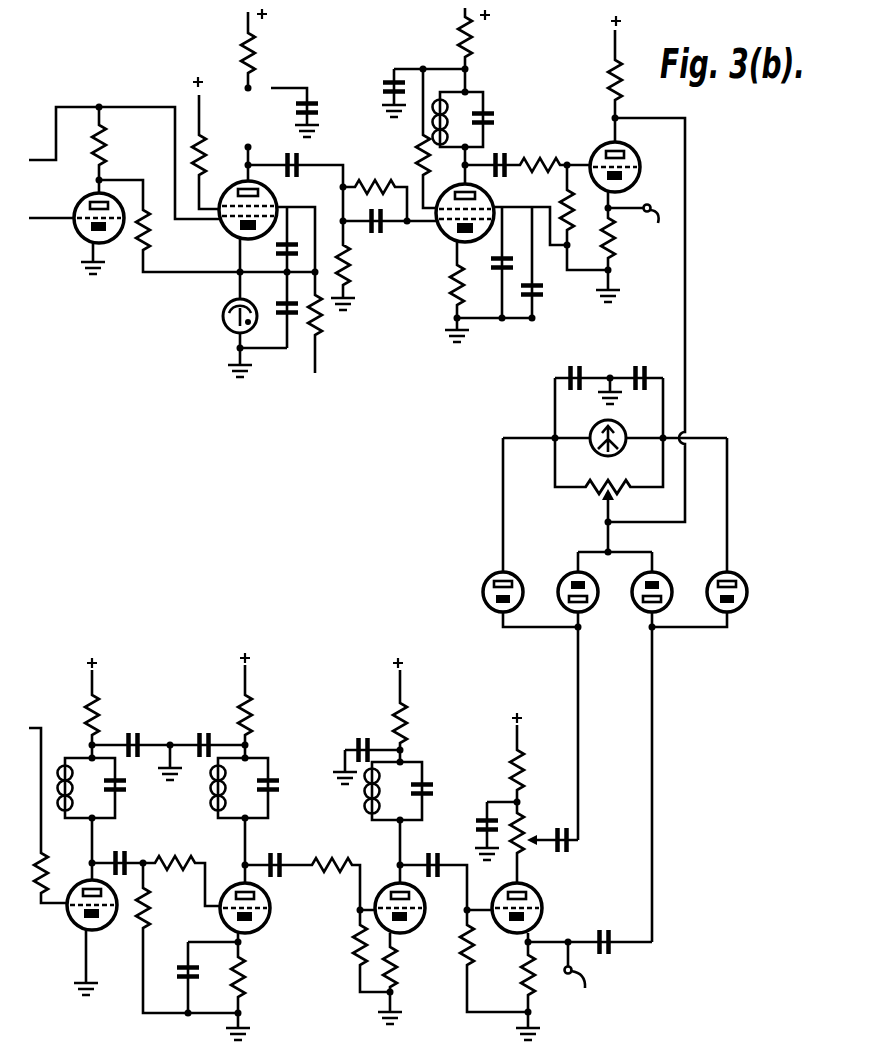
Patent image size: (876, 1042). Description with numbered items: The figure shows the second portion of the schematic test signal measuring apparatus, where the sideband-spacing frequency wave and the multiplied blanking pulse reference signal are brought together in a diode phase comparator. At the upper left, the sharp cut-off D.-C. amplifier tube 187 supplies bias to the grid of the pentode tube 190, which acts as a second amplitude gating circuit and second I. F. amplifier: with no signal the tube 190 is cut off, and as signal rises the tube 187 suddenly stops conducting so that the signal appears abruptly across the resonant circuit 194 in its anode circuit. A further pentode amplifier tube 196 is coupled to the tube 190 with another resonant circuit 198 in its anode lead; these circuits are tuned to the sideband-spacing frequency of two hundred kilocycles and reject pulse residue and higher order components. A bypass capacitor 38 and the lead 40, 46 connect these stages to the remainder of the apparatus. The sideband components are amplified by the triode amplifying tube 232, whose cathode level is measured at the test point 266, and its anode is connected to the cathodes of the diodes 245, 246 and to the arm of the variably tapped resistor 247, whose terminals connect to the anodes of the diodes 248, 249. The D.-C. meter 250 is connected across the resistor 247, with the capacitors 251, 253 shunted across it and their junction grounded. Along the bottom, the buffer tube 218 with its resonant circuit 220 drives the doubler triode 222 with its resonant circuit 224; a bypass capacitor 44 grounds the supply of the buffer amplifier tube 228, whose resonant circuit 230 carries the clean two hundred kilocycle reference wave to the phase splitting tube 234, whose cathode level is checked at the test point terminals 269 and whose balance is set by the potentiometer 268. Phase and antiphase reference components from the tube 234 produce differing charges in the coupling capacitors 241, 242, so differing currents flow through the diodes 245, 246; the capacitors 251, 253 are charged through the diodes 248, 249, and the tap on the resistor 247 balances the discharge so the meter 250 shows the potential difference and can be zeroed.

The D.-C. amplifier tube 187 is at (82, 207).
The pentode tube 190 is at (226, 236).
The resonant circuit 194 is at (240, 92).
The bypass capacitor 38 is at (413, 45).
The resonant circuit 198 is at (468, 104).
The pentode amplifier tube 196 is at (444, 238).
The triode amplifying tube 232 is at (590, 153).
The test point 266 is at (634, 241).
The capacitor 251 is at (572, 368).
The capacitor 253 is at (648, 366).
The D.-C. meter 250 is at (592, 446).
The variably tapped resistor 247 is at (596, 515).
The connection lead 40 is at (777, 469).
The connection lead 46 is at (810, 485).
The diode 248 is at (483, 593).
The diode 245 is at (557, 587).
The diode 246 is at (636, 603).
The diode 249 is at (746, 606).
The resonant circuit 220 is at (100, 800).
The resonant circuit 224 is at (270, 777).
The bypass capacitor 44 is at (357, 748).
The resonant circuit 230 is at (432, 746).
The potentiometer 268 is at (523, 828).
The coupling capacitor 241 is at (572, 852).
The buffer tube 218 is at (79, 928).
The doubler triode 222 is at (270, 905).
The buffer amplifier tube 228 is at (425, 905).
The phase splitting tube 234 is at (542, 893).
The coupling capacitor 242 is at (613, 953).
The test point terminals 269 is at (584, 997).